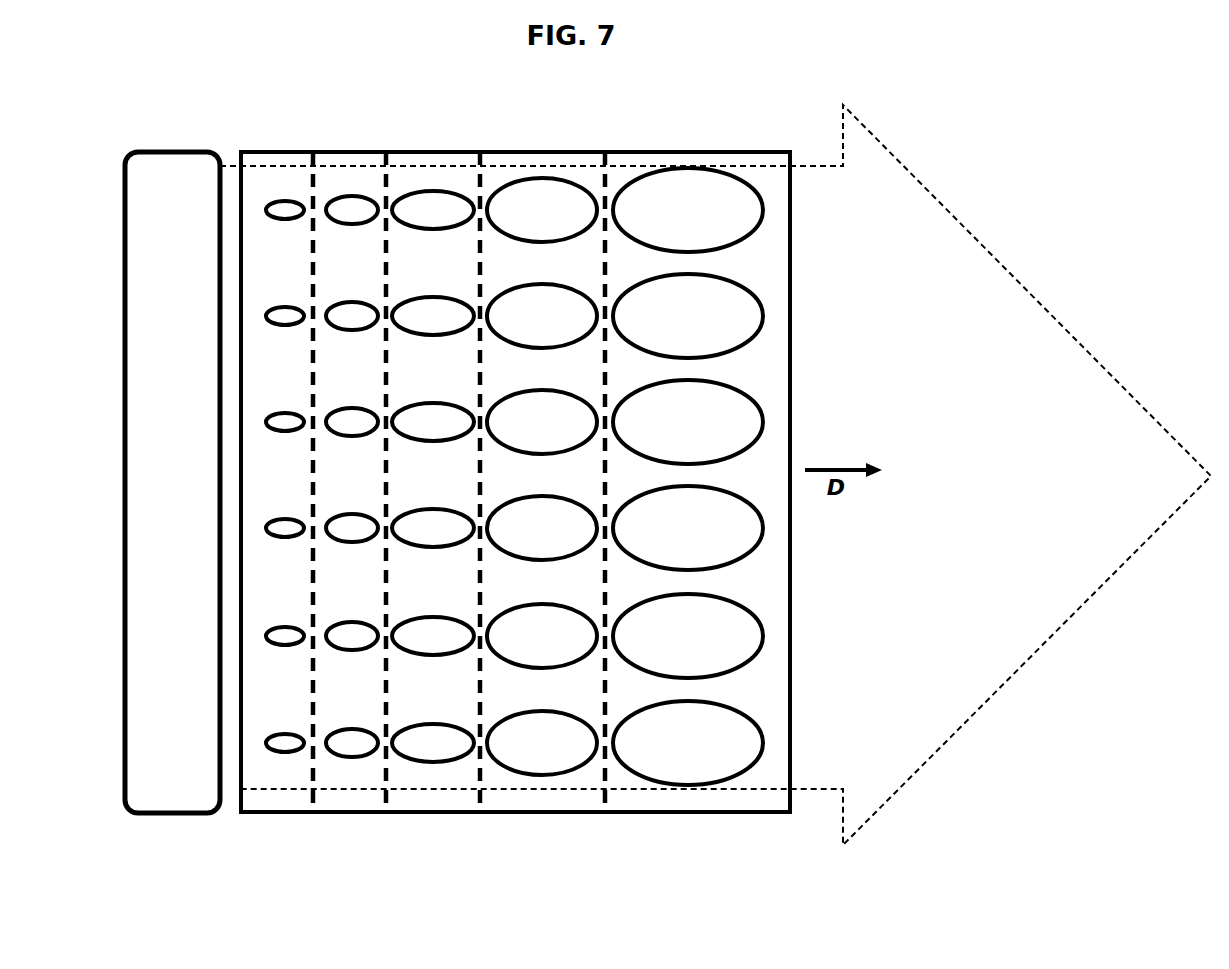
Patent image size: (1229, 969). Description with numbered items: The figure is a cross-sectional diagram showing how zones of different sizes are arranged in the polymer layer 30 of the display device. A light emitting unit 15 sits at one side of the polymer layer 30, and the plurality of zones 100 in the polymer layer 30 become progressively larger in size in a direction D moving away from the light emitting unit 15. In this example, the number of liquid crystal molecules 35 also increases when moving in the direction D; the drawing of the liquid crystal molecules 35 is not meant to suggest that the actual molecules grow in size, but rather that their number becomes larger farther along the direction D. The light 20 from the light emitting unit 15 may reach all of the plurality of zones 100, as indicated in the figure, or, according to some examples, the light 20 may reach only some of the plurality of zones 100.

The light emitting unit 15 is at (159, 496).
The light 20 is at (843, 838).
The polymer layer 30 is at (562, 813).
The liquid crystal molecules 35 is at (348, 770).
The plurality of zones 100 is at (510, 515).